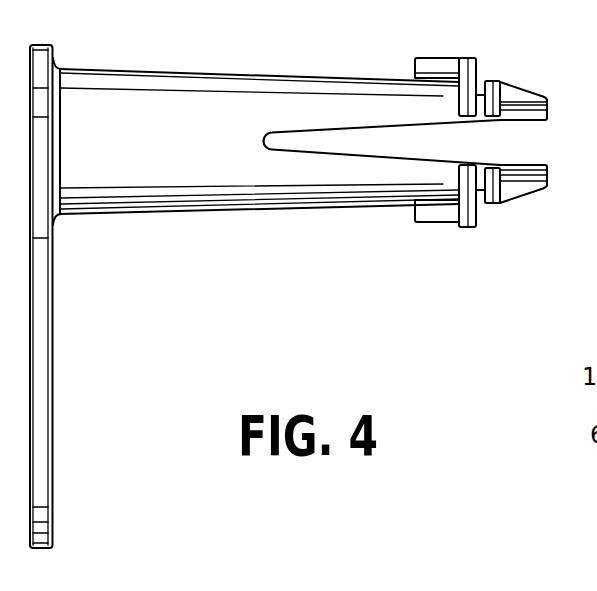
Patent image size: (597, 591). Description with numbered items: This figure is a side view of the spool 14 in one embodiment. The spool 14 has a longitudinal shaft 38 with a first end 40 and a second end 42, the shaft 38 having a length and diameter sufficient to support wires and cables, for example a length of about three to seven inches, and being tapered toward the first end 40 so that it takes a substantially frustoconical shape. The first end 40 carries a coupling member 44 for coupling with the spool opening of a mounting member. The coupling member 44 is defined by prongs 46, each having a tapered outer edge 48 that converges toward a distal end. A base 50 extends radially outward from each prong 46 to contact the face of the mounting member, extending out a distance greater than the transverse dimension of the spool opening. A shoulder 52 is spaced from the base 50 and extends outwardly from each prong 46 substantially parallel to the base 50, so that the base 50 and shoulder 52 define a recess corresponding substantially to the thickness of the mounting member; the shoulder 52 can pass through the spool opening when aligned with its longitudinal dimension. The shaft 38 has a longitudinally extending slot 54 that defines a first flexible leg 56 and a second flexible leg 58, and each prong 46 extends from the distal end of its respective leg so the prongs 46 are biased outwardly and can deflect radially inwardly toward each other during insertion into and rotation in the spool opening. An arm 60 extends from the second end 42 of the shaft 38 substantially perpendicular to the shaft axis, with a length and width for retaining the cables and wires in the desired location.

The spool 14 is at (280, 262).
The longitudinal shaft 38 is at (147, 214).
The first end 40 is at (527, 194).
The second end 42 is at (61, 70).
The coupling member 44 is at (493, 206).
The prongs 46 is at (547, 108).
The tapered outer edge 48 is at (525, 90).
The base 50 is at (465, 228).
The shoulder 52 is at (497, 80).
The longitudinally extending slot 54 is at (438, 143).
The first flexible leg 56 is at (344, 100).
The second flexible leg 58 is at (345, 186).
The arm 60 is at (53, 378).